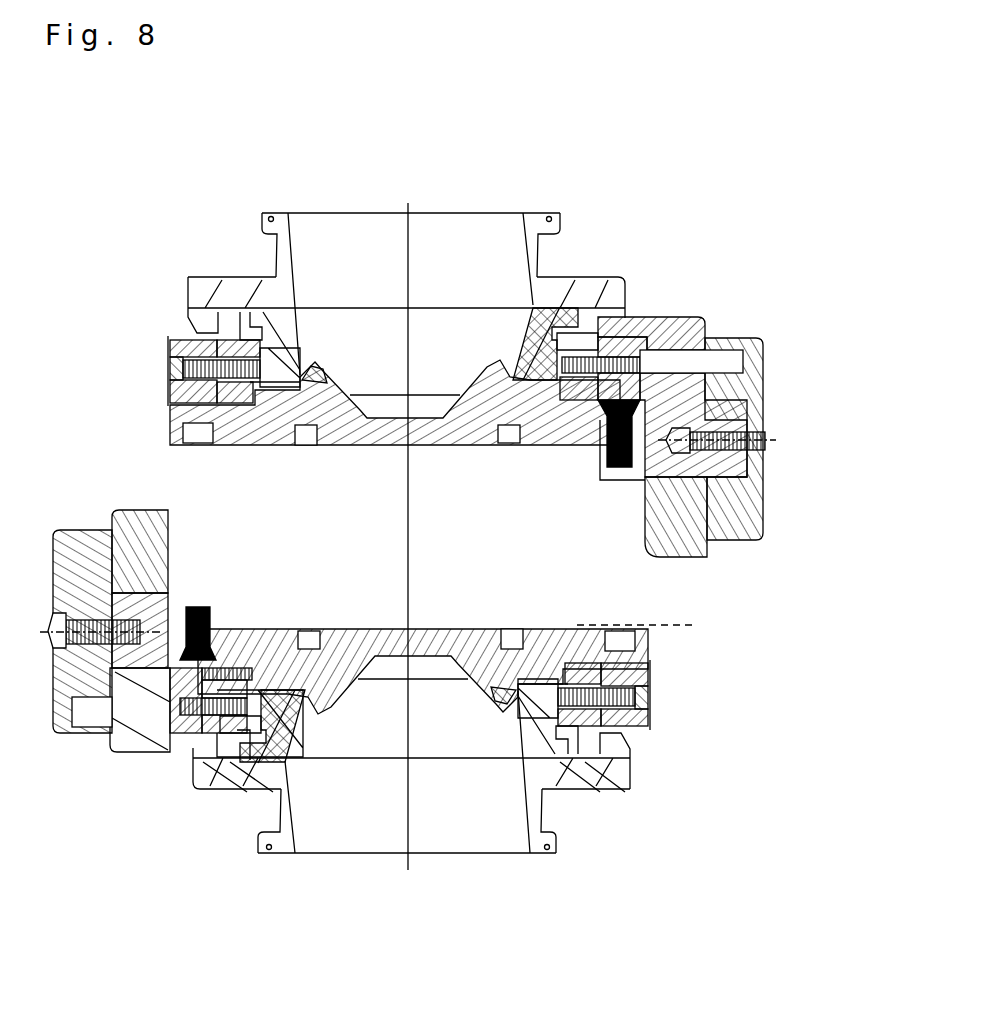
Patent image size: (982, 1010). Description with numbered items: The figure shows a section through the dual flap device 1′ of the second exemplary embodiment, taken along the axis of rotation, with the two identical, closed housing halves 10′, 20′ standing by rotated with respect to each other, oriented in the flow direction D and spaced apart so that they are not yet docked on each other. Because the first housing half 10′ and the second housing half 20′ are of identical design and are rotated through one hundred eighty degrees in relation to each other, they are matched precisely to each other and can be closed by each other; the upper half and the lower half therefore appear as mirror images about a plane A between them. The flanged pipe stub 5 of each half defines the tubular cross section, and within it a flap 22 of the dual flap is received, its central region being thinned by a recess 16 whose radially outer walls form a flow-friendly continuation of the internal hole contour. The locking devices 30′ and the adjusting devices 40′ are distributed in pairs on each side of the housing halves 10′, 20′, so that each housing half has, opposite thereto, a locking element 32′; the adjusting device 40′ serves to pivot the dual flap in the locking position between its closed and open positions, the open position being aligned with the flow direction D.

The dual flap device 1′ is at (602, 183).
The pipe flange housing 5 is at (527, 225).
The first recess 16 is at (322, 370).
The second housing half 20′ is at (557, 306).
The flap of the dual flap 22 is at (358, 395).
The locking device 30′ is at (635, 458).
The locking element 32′ is at (633, 678).
The adjusting device 40′ is at (738, 338).
The first housing half 10′ is at (535, 716).
The flow direction D is at (409, 151).
The sealing plane A is at (652, 629).